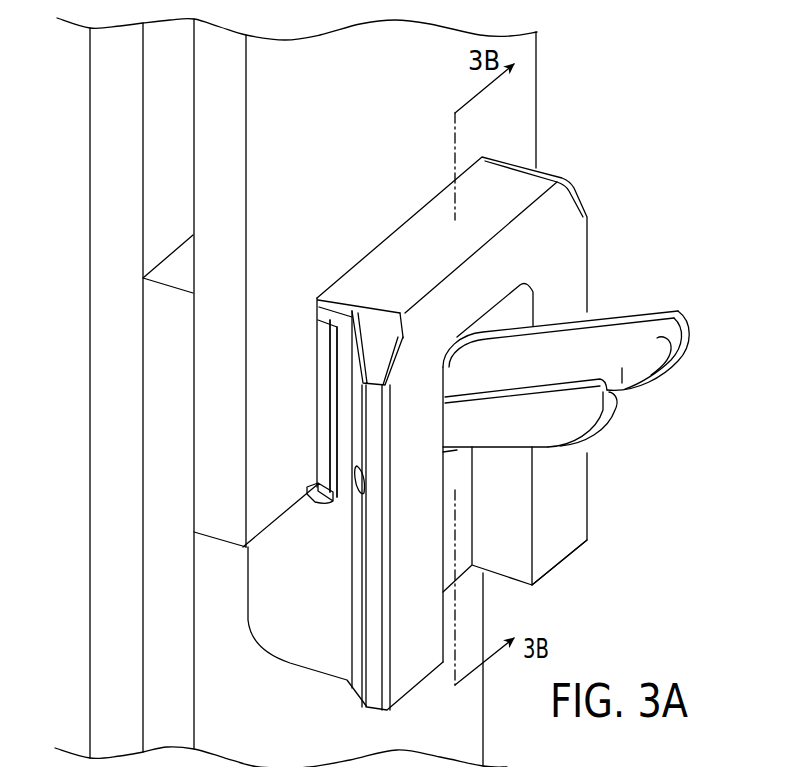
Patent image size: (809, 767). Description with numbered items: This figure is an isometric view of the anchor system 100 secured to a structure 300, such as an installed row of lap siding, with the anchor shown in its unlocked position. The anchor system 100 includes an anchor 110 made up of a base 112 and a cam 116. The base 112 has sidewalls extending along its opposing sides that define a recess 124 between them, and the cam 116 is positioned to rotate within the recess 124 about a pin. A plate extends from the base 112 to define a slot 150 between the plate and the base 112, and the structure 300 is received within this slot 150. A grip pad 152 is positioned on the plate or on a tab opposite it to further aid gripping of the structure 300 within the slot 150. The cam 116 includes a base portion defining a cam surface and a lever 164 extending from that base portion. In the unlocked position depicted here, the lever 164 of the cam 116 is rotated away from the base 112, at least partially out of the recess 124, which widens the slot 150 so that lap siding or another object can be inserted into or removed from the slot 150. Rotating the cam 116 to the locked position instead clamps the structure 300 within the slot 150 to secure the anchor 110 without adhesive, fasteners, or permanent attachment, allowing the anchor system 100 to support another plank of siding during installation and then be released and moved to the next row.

The anchor system 100 is at (509, 428).
The anchor 110 is at (452, 449).
The base 112 is at (290, 652).
The cam 116 is at (604, 367).
The recess 124 is at (510, 545).
The slot 150 is at (311, 503).
The grip pad 152 is at (328, 424).
The lever 164 is at (614, 406).
The structure 300 is at (215, 398).